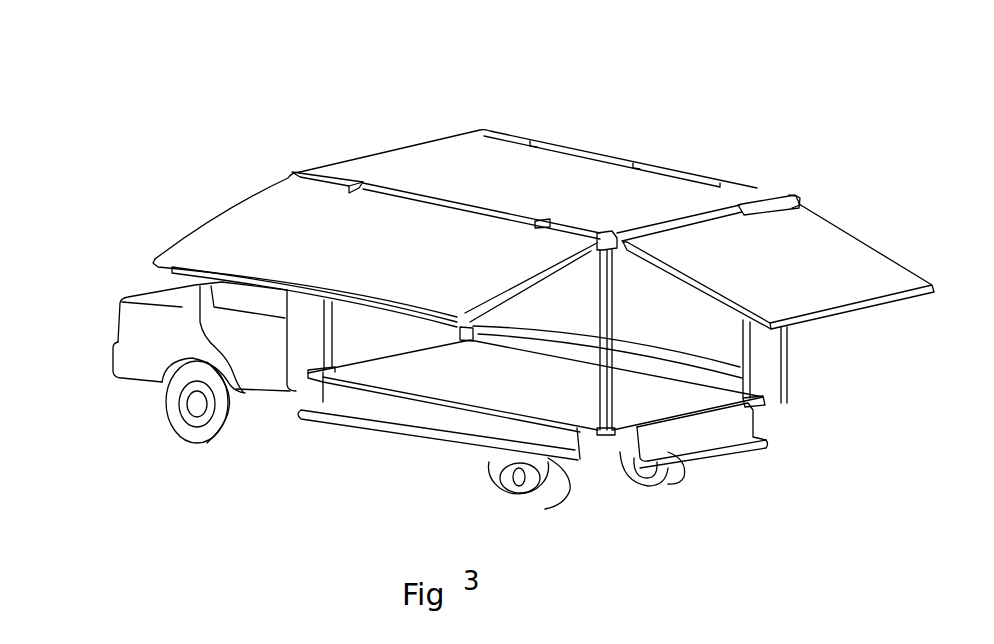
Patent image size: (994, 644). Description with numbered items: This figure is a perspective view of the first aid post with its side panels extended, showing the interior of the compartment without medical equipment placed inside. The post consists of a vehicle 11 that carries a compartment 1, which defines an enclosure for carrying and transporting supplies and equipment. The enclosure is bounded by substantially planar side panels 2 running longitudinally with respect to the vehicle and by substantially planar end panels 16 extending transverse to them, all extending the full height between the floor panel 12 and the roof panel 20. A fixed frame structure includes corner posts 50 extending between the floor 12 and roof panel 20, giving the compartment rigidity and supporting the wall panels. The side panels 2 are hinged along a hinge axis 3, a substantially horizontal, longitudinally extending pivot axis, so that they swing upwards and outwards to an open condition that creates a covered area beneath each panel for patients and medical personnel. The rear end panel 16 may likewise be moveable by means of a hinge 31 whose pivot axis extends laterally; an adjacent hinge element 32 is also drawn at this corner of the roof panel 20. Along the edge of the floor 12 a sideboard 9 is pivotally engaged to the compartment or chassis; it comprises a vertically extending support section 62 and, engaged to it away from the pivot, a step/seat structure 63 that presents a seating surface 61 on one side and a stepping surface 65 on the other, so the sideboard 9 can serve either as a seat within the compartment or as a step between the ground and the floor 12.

The compartment 1 is at (619, 17).
The side panel 2 is at (447, 275).
The hinge axis 3 is at (363, 185).
The sideboard 9 is at (417, 429).
The vehicle 11 is at (44, 455).
The floor panel 12 is at (535, 379).
The end panel 16 is at (828, 250).
The roof panel 20 is at (528, 185).
The hinge 31 is at (745, 204).
The hinge pin 32 is at (797, 194).
The corner post 50 is at (753, 371).
The seating surface 61 is at (745, 380).
The support section 62 is at (470, 421).
The step/seat structure 63 is at (733, 448).
The stepping surface 65 is at (363, 347).